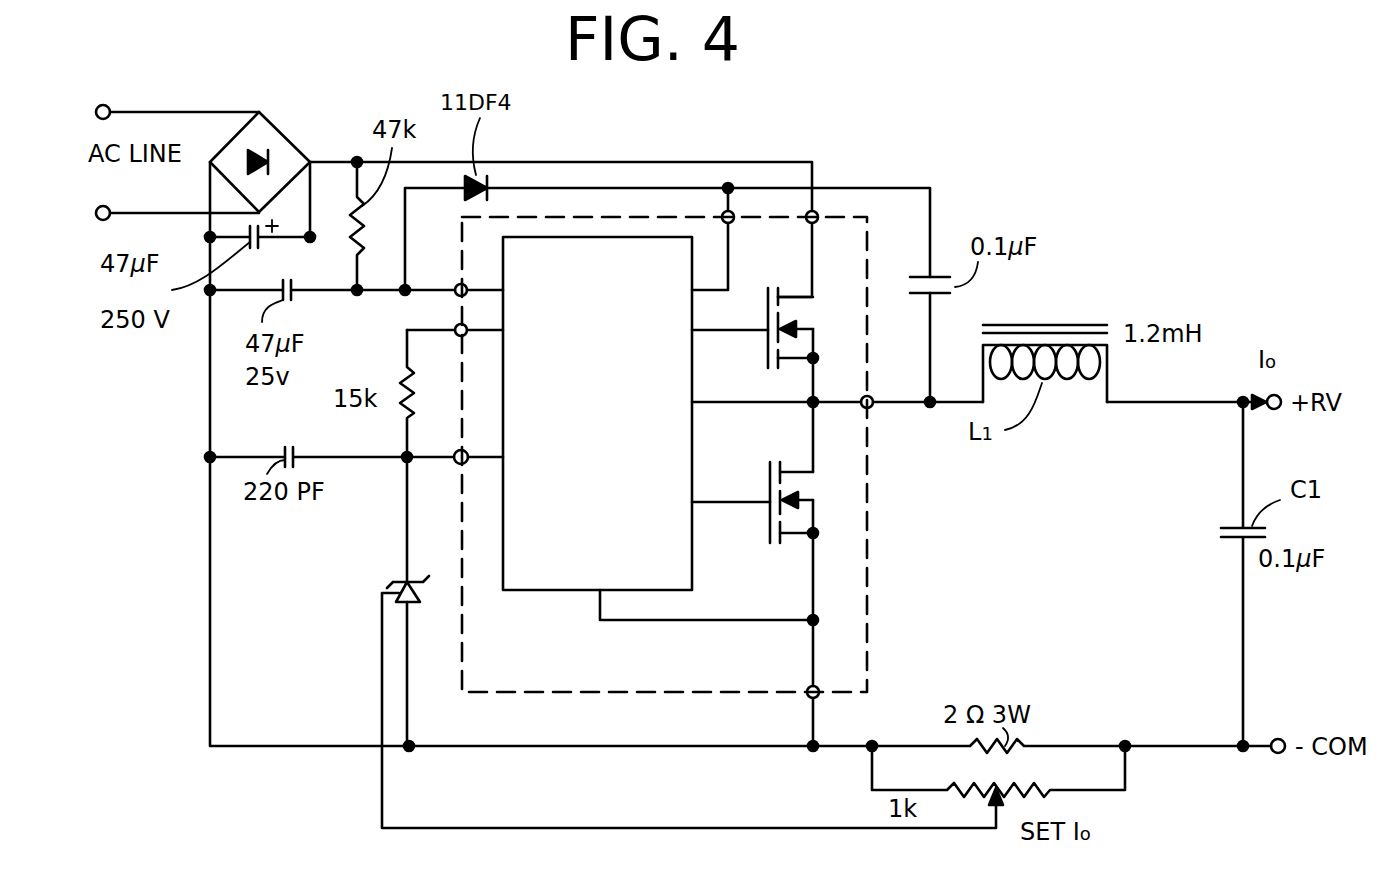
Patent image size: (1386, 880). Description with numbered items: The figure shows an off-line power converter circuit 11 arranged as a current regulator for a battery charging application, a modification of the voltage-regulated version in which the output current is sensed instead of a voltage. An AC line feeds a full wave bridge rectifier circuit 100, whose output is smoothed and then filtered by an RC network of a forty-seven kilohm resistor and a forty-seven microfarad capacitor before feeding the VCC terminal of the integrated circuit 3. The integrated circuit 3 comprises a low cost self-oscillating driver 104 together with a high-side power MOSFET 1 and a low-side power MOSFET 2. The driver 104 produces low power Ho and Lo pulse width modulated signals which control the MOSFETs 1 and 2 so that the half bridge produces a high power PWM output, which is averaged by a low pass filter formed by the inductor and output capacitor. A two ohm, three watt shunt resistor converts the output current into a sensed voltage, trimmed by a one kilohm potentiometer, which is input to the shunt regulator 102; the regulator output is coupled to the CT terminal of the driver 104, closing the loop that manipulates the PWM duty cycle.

The high-side power MOSFET 1 is at (820, 297).
The low-side power MOSFET 2 is at (800, 497).
The integrated circuit 3 is at (523, 696).
The power converter circuit 11 is at (949, 237).
The full wave bridge rectifier circuit 100 is at (297, 152).
The three terminal shunt regulator 102 is at (644, 642).
The self-oscillating driver 104 is at (566, 237).